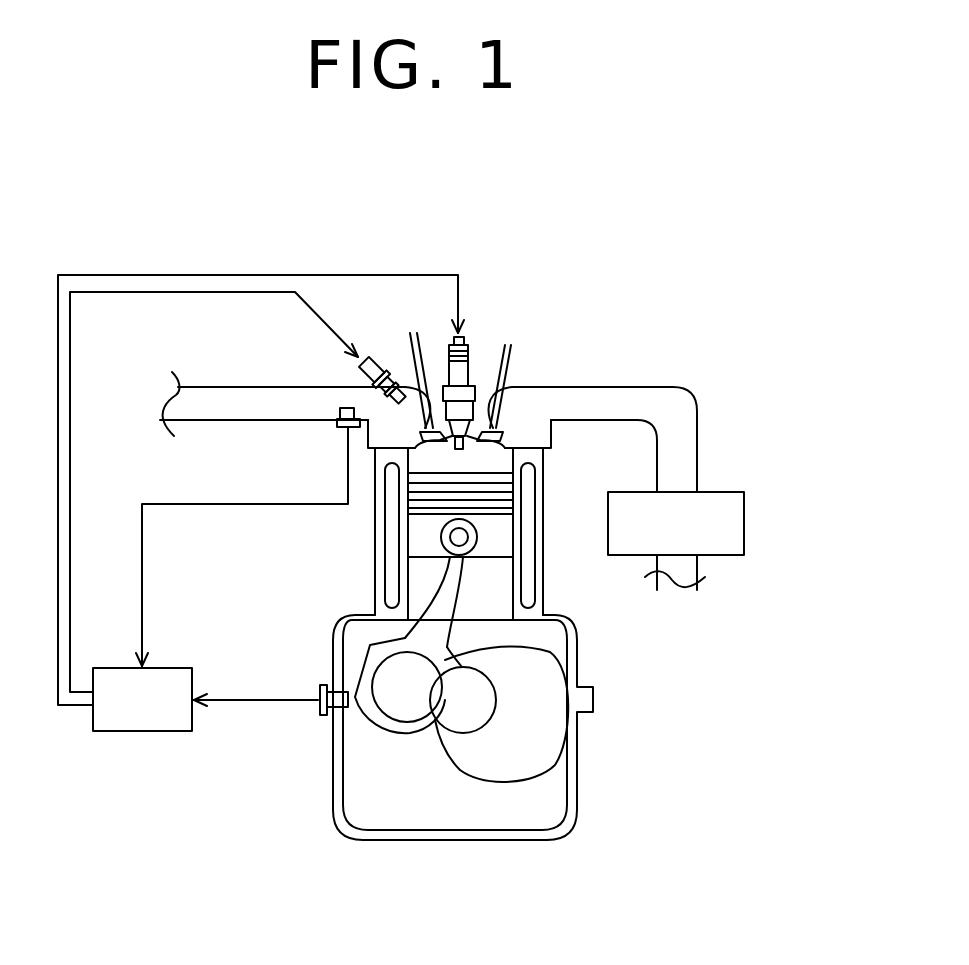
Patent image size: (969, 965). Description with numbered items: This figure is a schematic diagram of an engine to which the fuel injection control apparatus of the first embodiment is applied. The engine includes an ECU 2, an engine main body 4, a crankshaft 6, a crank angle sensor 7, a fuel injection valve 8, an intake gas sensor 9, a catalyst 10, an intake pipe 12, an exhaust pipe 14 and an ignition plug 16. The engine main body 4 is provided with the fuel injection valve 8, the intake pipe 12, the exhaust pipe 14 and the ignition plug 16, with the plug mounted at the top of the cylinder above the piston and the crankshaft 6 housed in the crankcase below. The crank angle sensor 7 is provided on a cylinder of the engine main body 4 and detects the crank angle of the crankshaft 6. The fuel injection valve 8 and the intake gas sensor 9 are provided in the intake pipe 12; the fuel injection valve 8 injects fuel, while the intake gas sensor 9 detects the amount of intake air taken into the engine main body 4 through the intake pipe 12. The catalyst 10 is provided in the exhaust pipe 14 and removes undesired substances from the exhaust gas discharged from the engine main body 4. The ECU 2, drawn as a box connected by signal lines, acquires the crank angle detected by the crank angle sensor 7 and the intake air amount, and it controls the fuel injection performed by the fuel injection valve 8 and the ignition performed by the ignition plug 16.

The ECU 2 is at (138, 732).
The engine main body 4 is at (615, 668).
The crankshaft 6 is at (393, 668).
The crank angle sensor 7 is at (322, 706).
The fuel injection valve 8 is at (363, 355).
The intake gas sensor 9 is at (338, 430).
The catalyst 10 is at (745, 522).
The intake pipe 12 is at (205, 421).
The exhaust pipe 14 is at (598, 421).
The ignition plug 16 is at (470, 352).